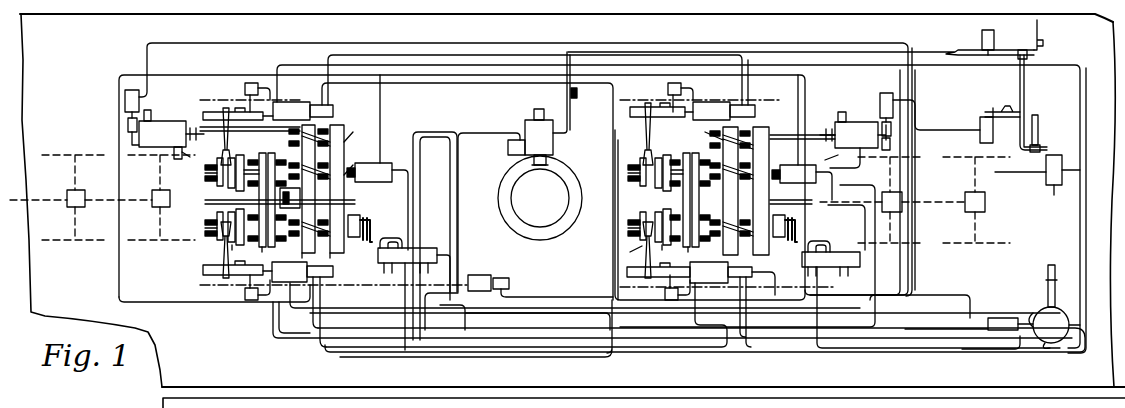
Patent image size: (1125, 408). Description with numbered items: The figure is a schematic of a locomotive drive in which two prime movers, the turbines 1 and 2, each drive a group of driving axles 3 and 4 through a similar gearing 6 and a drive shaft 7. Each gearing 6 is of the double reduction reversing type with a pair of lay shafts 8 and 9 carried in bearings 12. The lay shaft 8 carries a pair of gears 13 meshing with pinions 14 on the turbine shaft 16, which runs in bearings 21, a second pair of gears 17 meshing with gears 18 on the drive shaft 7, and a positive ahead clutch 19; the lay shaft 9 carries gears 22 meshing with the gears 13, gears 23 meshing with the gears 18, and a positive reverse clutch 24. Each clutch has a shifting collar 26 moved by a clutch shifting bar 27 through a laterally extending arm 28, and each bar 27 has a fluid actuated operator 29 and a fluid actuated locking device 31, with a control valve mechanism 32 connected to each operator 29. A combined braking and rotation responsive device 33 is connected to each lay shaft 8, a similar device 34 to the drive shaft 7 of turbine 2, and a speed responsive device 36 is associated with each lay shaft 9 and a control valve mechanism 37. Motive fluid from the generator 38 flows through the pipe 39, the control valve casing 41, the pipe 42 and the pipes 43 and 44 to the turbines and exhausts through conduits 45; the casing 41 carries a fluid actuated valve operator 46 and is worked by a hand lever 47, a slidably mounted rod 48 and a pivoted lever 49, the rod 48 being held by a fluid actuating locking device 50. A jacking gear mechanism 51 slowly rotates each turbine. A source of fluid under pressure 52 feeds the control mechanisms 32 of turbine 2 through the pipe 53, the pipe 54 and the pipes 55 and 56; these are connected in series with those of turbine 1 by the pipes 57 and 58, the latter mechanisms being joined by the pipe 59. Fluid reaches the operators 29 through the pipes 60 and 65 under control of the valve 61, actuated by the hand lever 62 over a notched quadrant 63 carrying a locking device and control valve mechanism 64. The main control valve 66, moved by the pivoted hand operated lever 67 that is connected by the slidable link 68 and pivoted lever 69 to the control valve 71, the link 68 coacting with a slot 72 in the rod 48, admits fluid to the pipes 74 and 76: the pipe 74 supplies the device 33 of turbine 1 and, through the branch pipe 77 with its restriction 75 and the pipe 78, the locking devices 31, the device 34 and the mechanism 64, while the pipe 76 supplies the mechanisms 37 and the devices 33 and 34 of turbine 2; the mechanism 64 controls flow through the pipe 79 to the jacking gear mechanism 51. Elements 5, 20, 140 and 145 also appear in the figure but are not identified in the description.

The prime mover 1 is at (853, 135).
The prime mover 2 is at (168, 134).
The driving axles 3 is at (955, 219).
The driving axles 4 is at (140, 198).
The shaft 5 is at (184, 156).
The gearing 6 is at (479, 157).
The drive shaft 7 is at (515, 209).
The lay shaft 8 is at (416, 179).
The lay shaft 9 is at (416, 226).
The bearings 12 is at (472, 195).
The gears 13 is at (530, 162).
The pinions 14 is at (531, 188).
The turbine shaft 16 is at (517, 128).
The gears 17 is at (478, 193).
The gears 18 is at (450, 221).
The positive ahead clutch 19 is at (450, 166).
The gear 20 is at (630, 249).
The bearings 21 is at (522, 181).
The gears 22 is at (519, 231).
The gears 23 is at (477, 252).
The positive reverse clutch 24 is at (453, 252).
The shifting collar 26 is at (420, 201).
The clutch shifting bar 27 is at (510, 192).
The laterally extending arm 28 is at (434, 190).
The fluid actuated operator 29 is at (496, 191).
The fluid actuated locking device 31 is at (460, 192).
The control valve mechanism 32 is at (530, 203).
The combined braking and rotation responsive device 33 is at (589, 162).
The combined braking and rotation responsive device 34 is at (290, 198).
The speed responsive device 36 is at (572, 221).
The control valve mechanism 37 is at (622, 291).
The generator 38 is at (550, 205).
The pipe 39 is at (550, 162).
The control valve casing 41 is at (553, 150).
The pipe 42 is at (535, 113).
The pipe 43 is at (851, 113).
The pipe 44 is at (156, 110).
The conduits 45 is at (541, 156).
The fluid actuated valve operator 46 is at (508, 150).
The hand lever 47 is at (1048, 35).
The slidably mounted rod 48 is at (801, 46).
The pivoted lever 49 is at (572, 112).
The fluid actuating locking device 50 is at (998, 37).
The jacking gear mechanism 51 is at (125, 100).
The source of fluid under pressure 52 is at (490, 278).
The pipe 53 is at (542, 297).
The pipe 54 is at (616, 212).
The pipe 55 is at (612, 320).
The pipe 56 is at (692, 218).
The pipe 57 is at (450, 55).
The pipe 58 is at (675, 323).
The pipe 59 is at (785, 85).
The pipe 60 is at (1058, 64).
The valve 61 is at (1058, 332).
The hand lever 62 is at (1061, 286).
The notched quadrant 63 is at (1036, 315).
The fluid actuated locking device and control valve mechanism 64 is at (996, 324).
The pipe 65 is at (649, 332).
The main control valve 66 is at (1063, 167).
The pivoted hand operated lever 67 is at (1043, 130).
The slidable link 68 is at (1022, 90).
The pivoted lever 69 is at (985, 110).
The control valve 71 is at (964, 106).
The slot 72 is at (1014, 46).
The pipe 74 is at (1020, 182).
The restriction 75 is at (834, 158).
The pipe 76 is at (656, 251).
The branch pipe 77 is at (845, 161).
The pipe 78 is at (544, 192).
The pipe 79 is at (563, 182).
The valve 140 is at (607, 240).
The pipe 145 is at (825, 320).